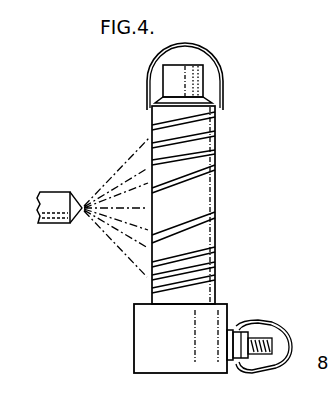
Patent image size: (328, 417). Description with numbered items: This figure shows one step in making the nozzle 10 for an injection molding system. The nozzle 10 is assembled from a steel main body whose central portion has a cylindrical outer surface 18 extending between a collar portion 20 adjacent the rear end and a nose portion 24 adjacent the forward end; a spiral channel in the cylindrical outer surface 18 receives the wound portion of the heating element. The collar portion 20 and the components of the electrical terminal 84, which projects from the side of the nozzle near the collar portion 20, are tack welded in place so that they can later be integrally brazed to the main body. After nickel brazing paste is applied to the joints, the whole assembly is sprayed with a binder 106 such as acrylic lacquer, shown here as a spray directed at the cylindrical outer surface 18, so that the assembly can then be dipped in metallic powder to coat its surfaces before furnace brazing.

The nozzle 10 is at (219, 189).
The cylindrical outer surface 18 is at (217, 230).
The collar portion 20 is at (148, 352).
The nose portion 24 is at (194, 80).
The electrical terminal 84 is at (274, 333).
The binder 106 is at (104, 186).